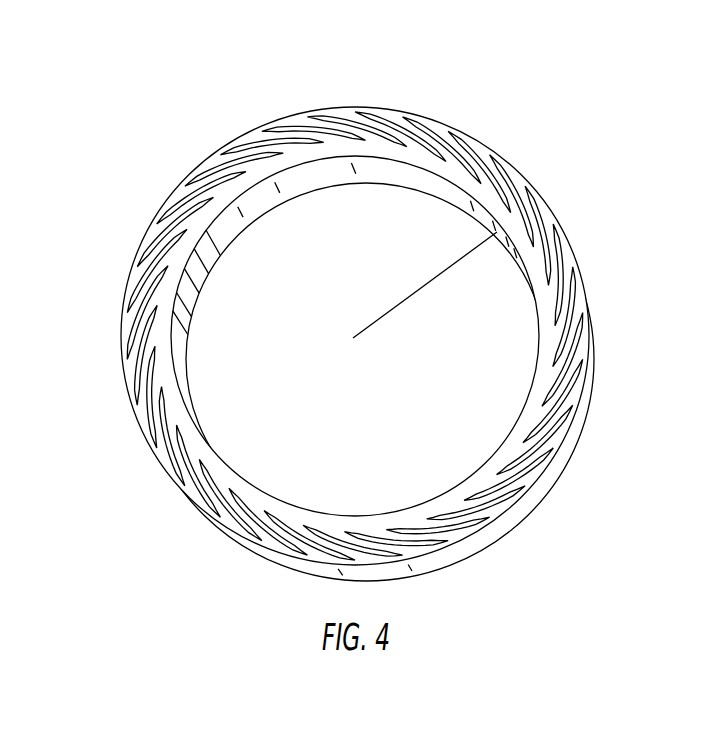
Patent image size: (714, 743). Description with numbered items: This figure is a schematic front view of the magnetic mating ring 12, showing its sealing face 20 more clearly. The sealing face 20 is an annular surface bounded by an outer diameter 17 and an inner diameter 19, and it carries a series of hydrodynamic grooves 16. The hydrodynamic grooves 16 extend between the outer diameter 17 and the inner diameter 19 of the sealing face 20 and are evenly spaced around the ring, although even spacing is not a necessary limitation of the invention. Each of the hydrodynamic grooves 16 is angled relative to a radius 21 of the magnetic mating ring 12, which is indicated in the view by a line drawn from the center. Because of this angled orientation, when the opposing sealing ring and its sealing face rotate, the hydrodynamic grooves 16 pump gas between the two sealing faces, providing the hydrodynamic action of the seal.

The magnetic mating ring 12 is at (369, 40).
The hydrodynamic grooves 16 is at (355, 340).
The outer diameter 17 is at (122, 332).
The inner diameter 19 is at (192, 253).
The sealing face 20 is at (255, 532).
The radius 21 is at (430, 282).